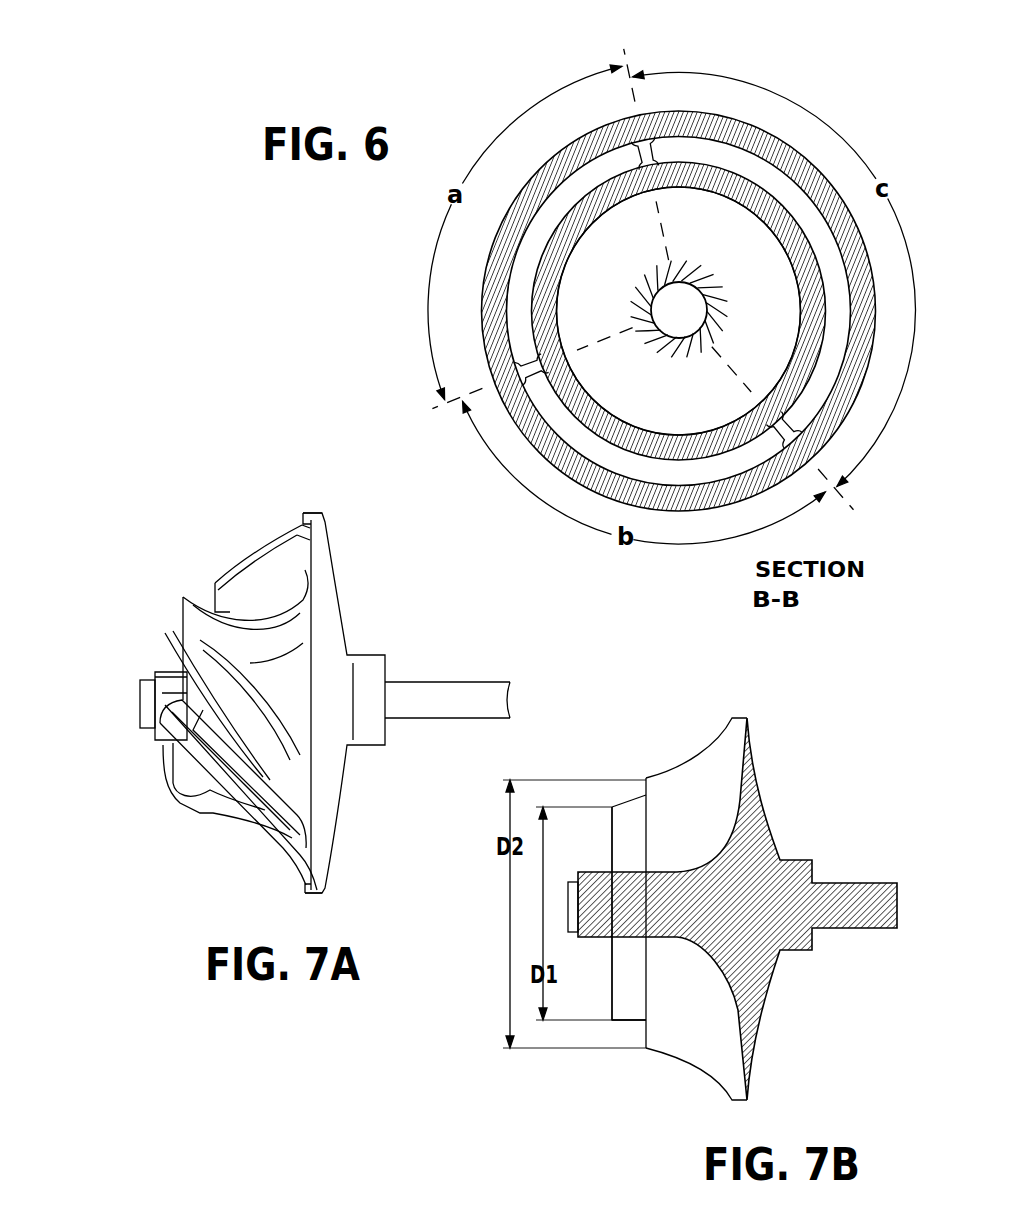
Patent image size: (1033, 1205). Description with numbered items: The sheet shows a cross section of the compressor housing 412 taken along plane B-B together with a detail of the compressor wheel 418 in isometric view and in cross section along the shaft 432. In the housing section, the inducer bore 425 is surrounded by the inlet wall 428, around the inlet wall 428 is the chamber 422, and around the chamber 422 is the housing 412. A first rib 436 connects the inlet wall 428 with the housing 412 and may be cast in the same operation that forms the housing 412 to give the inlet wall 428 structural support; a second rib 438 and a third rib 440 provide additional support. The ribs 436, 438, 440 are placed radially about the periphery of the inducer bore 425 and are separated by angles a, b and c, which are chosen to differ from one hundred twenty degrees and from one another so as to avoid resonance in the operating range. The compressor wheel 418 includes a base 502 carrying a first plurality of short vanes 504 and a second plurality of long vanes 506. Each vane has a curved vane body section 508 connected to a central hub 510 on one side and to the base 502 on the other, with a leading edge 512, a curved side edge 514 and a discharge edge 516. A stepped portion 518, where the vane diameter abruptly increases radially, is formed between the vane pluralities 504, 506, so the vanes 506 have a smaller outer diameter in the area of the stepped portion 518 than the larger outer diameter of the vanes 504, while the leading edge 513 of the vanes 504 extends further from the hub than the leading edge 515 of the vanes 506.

In FIG. 6, the compressor housing 412 is at (485, 350).
In FIG. 6, the compressor wheel 418 is at (697, 322).
In FIG. 7A, the compressor wheel 418 is at (150, 717).
In FIG. 6, the chamber 422 is at (634, 158).
In FIG. 6, the inducer bore 425 is at (606, 408).
In FIG. 6, the inlet wall 428 is at (530, 315).
In FIG. 7A, the shaft 432 is at (470, 690).
In FIG. 6, the first rib 436 is at (638, 155).
In FIG. 6, the second rib 438 is at (459, 404).
In FIG. 6, the third rib 440 is at (793, 437).
In FIG. 7A, the base 502 is at (327, 613).
In FIG. 7B, the base 502 is at (767, 914).
In FIG. 7A, the first plurality of short vanes 504 is at (237, 597).
In FIG. 7B, the first plurality of short vanes 504 is at (710, 839).
In FIG. 7A, the second plurality of long vanes 506 is at (178, 612).
In FIG. 7B, the second plurality of long vanes 506 is at (707, 1014).
In FIG. 7A, the curved vane body section 508 is at (267, 777).
In FIG. 7A, the central hub 510 is at (168, 675).
In FIG. 7A, the leading edge 512 is at (182, 620).
In FIG. 7B, the leading edge 513 is at (645, 780).
In FIG. 7A, the curved side edge 514 is at (220, 817).
In FIG. 7B, the leading edge 515 is at (611, 850).
In FIG. 7A, the discharge edge 516 is at (322, 515).
In FIG. 7A, the stepped portion 518 is at (173, 743).
In FIG. 7B, the stepped portion 518 is at (627, 792).